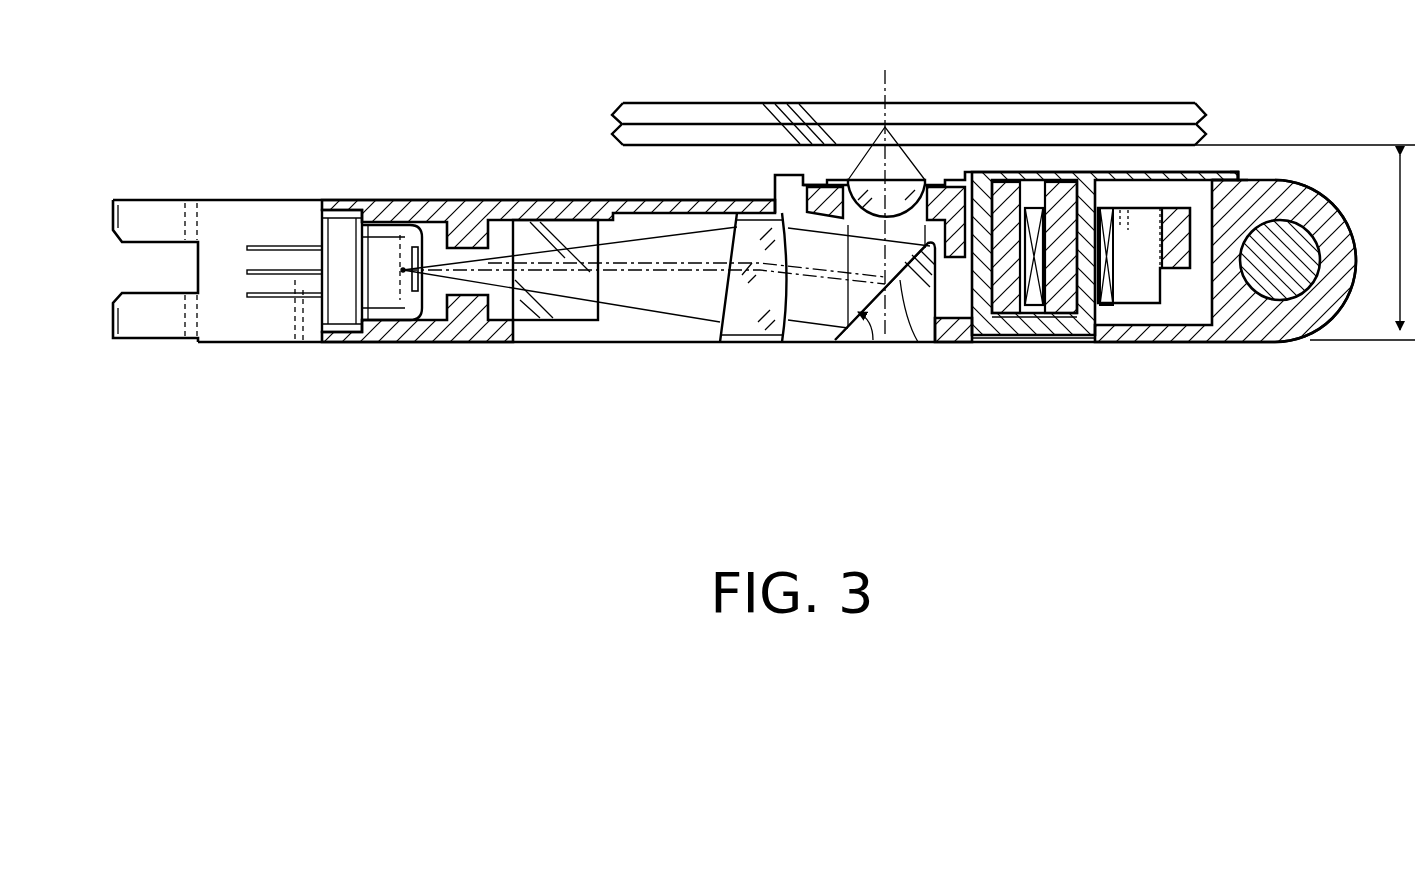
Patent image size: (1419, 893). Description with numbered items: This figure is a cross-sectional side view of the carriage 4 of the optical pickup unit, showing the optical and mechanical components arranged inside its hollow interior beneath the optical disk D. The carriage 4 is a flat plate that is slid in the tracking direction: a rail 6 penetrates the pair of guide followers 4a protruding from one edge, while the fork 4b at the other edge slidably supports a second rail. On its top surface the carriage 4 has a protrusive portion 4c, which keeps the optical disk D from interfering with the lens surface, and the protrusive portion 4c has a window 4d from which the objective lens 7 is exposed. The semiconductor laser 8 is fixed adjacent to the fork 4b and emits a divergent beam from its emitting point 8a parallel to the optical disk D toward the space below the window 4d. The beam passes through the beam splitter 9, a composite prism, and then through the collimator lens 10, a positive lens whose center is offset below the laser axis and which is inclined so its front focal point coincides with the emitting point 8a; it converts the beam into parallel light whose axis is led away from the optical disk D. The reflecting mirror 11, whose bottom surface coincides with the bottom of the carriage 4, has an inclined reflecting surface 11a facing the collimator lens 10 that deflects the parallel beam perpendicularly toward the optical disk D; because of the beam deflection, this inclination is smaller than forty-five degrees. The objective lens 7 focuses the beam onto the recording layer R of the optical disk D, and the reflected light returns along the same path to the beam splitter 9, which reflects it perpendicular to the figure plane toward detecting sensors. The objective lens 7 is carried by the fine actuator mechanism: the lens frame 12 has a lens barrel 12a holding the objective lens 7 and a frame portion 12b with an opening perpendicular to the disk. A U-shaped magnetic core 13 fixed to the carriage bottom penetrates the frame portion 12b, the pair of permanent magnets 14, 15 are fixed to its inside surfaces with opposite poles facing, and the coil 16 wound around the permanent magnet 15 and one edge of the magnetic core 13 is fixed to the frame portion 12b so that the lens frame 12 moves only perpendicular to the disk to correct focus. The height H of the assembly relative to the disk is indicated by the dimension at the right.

The carriage 4 is at (1224, 382).
The guide followers 4a is at (1322, 196).
The fork 4b is at (172, 200).
The protrusive portion 4c is at (1239, 174).
The window 4d is at (818, 188).
The rail 6 is at (1278, 287).
The objective lens 7 is at (903, 187).
The semiconductor laser 8 is at (383, 230).
The emitting point 8a is at (410, 278).
The beam splitter 9 is at (570, 300).
The collimator lens 10 is at (743, 330).
The reflecting mirror 11 is at (903, 330).
The reflecting surface 11a is at (927, 343).
The lens frame 12 is at (950, 187).
The lens barrel 12a is at (818, 190).
The frame portion 12b is at (1135, 207).
The magnetic core 13 is at (1050, 285).
The permanent magnet 14 is at (1003, 283).
The permanent magnet 15 is at (1060, 283).
The coil 16 is at (1122, 280).
The optical disk D is at (662, 103).
The recording layer R is at (857, 124).
The height H is at (1304, 242).